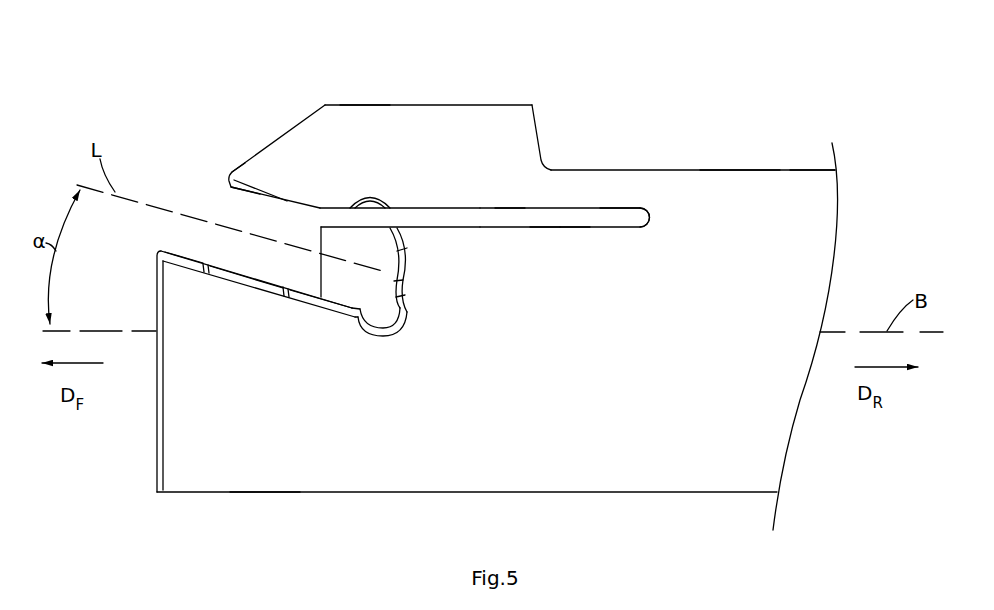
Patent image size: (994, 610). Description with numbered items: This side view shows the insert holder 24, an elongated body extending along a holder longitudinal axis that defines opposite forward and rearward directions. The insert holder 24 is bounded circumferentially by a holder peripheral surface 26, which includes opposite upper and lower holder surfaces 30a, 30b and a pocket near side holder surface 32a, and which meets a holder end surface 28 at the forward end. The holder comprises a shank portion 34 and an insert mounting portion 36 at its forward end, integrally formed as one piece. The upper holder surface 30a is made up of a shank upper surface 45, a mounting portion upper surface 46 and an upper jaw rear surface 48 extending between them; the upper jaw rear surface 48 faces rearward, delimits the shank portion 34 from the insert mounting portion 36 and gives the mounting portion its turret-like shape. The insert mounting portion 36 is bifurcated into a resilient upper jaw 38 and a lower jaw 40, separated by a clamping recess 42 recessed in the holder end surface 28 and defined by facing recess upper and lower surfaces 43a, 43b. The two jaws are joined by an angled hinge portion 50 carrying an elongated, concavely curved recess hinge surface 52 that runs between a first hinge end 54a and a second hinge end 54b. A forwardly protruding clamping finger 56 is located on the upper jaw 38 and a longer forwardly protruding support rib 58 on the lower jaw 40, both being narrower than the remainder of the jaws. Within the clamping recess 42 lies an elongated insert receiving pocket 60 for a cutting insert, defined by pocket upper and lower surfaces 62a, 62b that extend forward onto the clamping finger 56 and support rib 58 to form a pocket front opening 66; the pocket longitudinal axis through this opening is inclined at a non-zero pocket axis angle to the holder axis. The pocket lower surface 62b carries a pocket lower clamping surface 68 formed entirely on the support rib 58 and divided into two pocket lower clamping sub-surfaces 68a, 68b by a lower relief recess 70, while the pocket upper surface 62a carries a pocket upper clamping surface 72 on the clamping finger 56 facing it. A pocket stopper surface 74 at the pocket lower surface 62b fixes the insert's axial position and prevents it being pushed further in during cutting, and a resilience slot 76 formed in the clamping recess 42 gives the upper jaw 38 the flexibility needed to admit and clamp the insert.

The insert holder 24 is at (740, 108).
The holder peripheral surface 26 is at (700, 450).
The holder end surface 28 is at (157, 398).
The upper holder surface 30a is at (637, 170).
The lower holder surface 30b is at (604, 493).
The pocket near side holder surface 32a is at (473, 398).
The shank portion 34 is at (652, 98).
The insert mounting portion 36 is at (404, 78).
The upper jaw 38 is at (464, 126).
The lower jaw 40 is at (211, 397).
The clamping recess 42 is at (431, 226).
The recess upper surface 43a is at (510, 212).
The recess lower surface 43b is at (572, 223).
The shank upper surface 45 is at (775, 167).
The mounting portion upper surface 46 is at (363, 104).
The upper jaw rear surface 48 is at (539, 138).
The angled hinge portion 50 is at (699, 225).
The recess hinge surface 52 is at (613, 217).
The first hinge end 54a is at (637, 219).
The second hinge end 54b is at (477, 217).
The clamping finger 56 is at (283, 116).
The support rib 58 is at (268, 437).
The insert receiving pocket 60 is at (282, 236).
The pocket upper surface 62a is at (236, 193).
The pocket lower surface 62b is at (194, 196).
The pocket front opening 66 is at (190, 167).
The pocket lower clamping surface 68 is at (170, 248).
The pocket lower clamping sub-surface 68a is at (301, 289).
The pocket lower clamping sub-surface 68b is at (195, 264).
The lower relief recess 70 is at (237, 276).
The pocket upper clamping surface 72 is at (215, 234).
The pocket stopper surface 74 is at (399, 278).
The resilience slot 76 is at (544, 222).